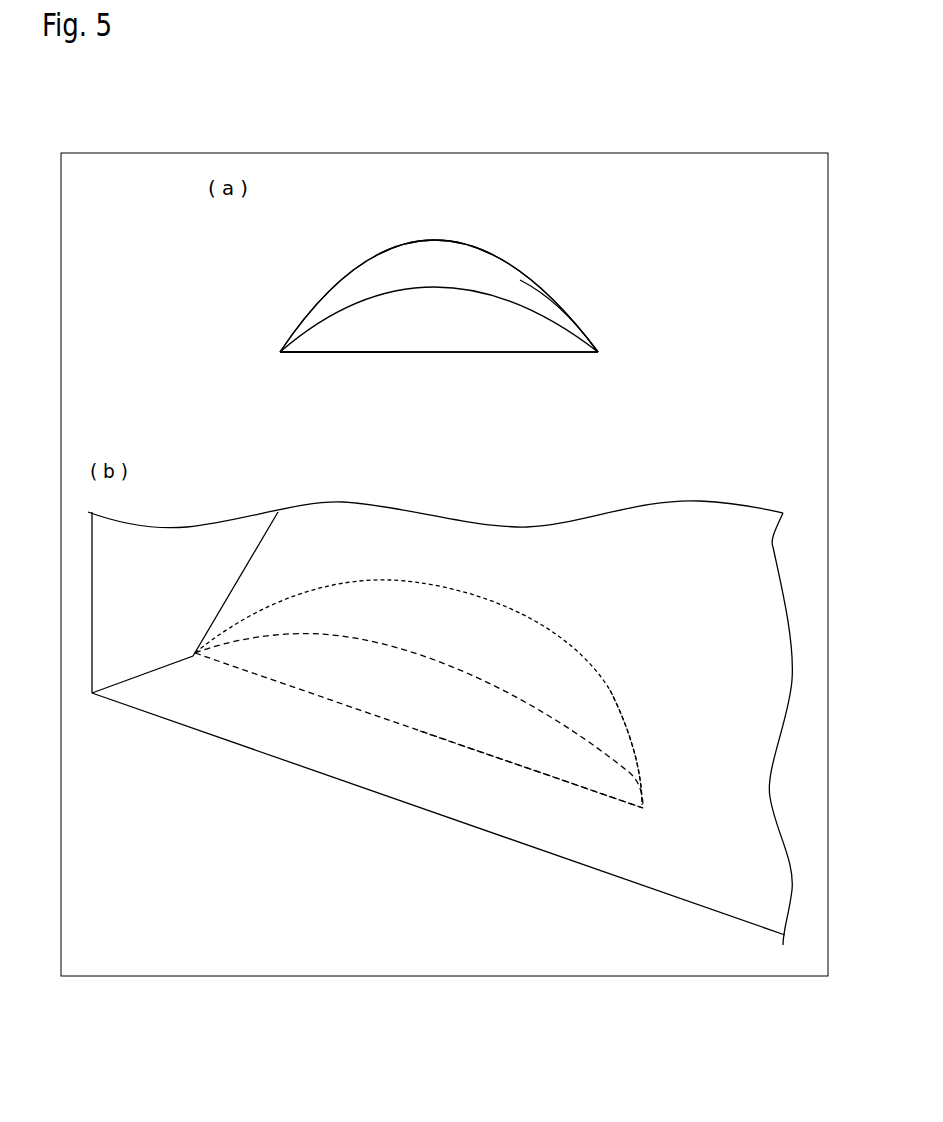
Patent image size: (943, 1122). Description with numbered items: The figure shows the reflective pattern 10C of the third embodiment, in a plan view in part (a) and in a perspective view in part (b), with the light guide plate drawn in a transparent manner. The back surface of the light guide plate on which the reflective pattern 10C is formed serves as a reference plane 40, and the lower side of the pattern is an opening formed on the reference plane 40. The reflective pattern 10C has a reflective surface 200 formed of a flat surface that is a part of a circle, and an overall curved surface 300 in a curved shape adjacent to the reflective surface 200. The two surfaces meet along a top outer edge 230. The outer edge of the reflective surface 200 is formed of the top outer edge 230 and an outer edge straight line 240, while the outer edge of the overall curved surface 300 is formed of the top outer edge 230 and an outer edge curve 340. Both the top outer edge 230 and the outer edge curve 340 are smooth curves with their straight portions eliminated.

The reflective pattern 10C is at (589, 220).
The reference plane 40 is at (449, 412).
The reflective surface 200 is at (513, 325).
The top outer edge 230 is at (338, 308).
The outer edge straight line 240 is at (337, 353).
The overall curved surface 300 is at (431, 252).
The outer edge curve 340 is at (547, 288).